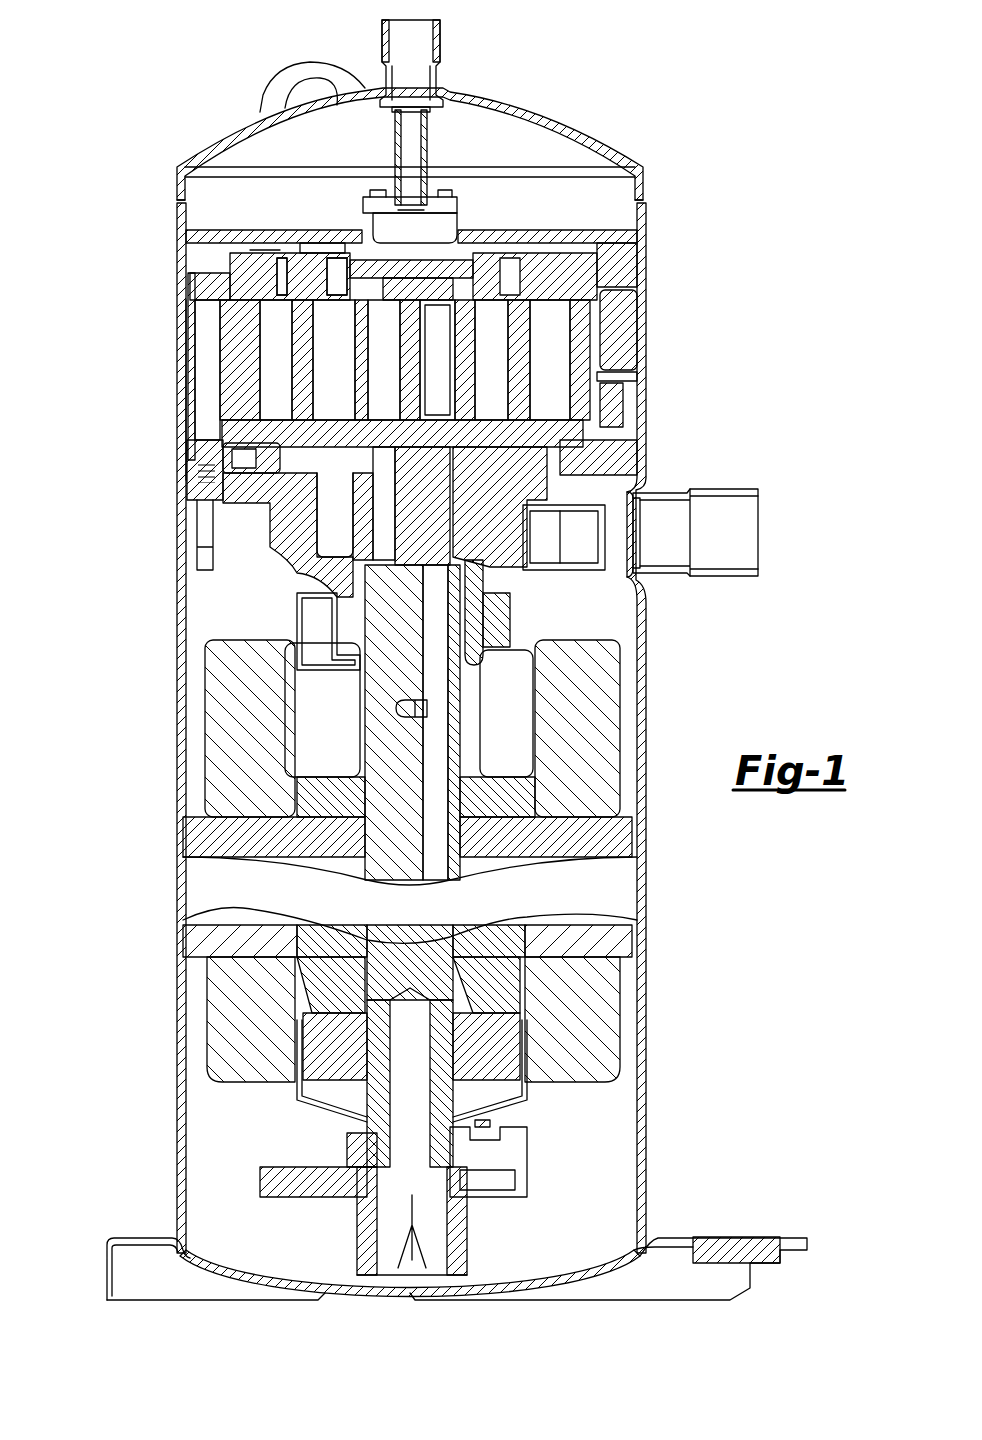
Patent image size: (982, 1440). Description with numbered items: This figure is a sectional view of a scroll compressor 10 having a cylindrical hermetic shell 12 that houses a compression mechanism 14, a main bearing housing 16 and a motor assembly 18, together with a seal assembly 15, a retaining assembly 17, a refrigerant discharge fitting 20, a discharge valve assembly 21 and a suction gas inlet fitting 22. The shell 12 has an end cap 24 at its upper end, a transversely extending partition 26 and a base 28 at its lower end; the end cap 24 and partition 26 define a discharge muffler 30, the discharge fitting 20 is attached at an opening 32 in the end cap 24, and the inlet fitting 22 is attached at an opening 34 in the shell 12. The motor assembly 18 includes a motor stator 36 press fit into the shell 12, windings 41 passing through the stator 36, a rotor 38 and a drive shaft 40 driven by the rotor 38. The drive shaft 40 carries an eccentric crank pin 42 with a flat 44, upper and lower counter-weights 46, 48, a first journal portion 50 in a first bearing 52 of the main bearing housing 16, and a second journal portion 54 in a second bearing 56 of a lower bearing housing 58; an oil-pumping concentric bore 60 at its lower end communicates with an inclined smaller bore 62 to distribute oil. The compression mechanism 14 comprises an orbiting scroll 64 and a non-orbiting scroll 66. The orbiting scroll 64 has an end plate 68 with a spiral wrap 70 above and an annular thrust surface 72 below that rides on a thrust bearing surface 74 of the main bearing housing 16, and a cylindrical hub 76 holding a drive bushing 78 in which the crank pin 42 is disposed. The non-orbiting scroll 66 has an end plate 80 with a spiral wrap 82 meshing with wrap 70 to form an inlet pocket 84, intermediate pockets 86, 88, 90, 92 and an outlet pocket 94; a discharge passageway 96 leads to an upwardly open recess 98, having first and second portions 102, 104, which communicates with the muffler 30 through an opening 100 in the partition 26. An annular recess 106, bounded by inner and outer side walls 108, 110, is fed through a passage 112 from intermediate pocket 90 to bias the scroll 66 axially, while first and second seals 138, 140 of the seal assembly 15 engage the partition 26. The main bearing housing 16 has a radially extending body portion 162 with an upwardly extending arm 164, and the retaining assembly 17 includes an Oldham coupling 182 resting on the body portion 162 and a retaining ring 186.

The compressor 10 is at (457, 681).
The cylindrical hermetic shell 12 is at (644, 665).
The compression mechanism 14 is at (416, 217).
The seal assembly 15 is at (276, 258).
The main bearing housing 16 is at (347, 436).
The retaining assembly 17 is at (182, 345).
The motor assembly 18 is at (367, 861).
The refrigerant discharge fitting 20 is at (382, 40).
The discharge valve assembly 21 is at (437, 217).
The suction gas inlet fitting 22 is at (692, 499).
The end cap 24 is at (560, 120).
The transversely extending partition 26 is at (285, 240).
The base 28 is at (690, 1237).
The discharge muffler 30 is at (288, 154).
The opening 32 is at (430, 95).
The opening 34 is at (634, 495).
The motor stator 36 is at (254, 908).
The rotor 38 is at (320, 805).
The drive shaft 40 is at (382, 774).
The windings 41 is at (215, 662).
The eccentric crank pin 42 is at (410, 532).
The flat 44 is at (384, 442).
The upper counter-weight 46 is at (325, 665).
The lower counter-weight 48 is at (518, 1045).
The first journal portion 50 is at (398, 627).
The first bearing 52 is at (472, 603).
The second journal portion 54 is at (372, 1150).
The second bearing 56 is at (434, 1185).
The lower bearing housing 58 is at (358, 1228).
The oil-pumping concentric bore 60 is at (402, 1086).
The inclined bore 62 is at (448, 746).
The orbiting scroll 64 is at (602, 420).
The non-orbiting scroll 66 is at (562, 232).
The end plate 68 is at (232, 460).
The spiral wrap 70 is at (600, 372).
The annular flat thrust surface 72 is at (548, 478).
The thrust bearing surface 74 is at (296, 405).
The cylindrical hub 76 is at (350, 500).
The drive bushing 78 is at (470, 455).
The end plate 80 is at (222, 300).
The spiral wrap 82 is at (562, 302).
The inlet pocket 84 is at (535, 376).
The intermediate pocket 86 is at (482, 352).
The intermediate pocket 88 is at (427, 369).
The intermediate pocket 90 is at (320, 354).
The intermediate pocket 92 is at (266, 334).
The outlet pocket 94 is at (373, 359).
The discharge passageway 96 is at (400, 295).
The upwardly open recess 98 is at (458, 232).
The opening 100 is at (426, 208).
The first portion 102 is at (411, 263).
The second portion 104 is at (372, 214).
The annular recess 106 is at (525, 298).
The inner side wall 108 is at (336, 255).
The outer side wall 110 is at (200, 236).
The passage 112 is at (300, 305).
The first seal 138 is at (338, 258).
The second seal 140 is at (282, 255).
The radially extending body portion 162 is at (245, 490).
The arm 164 is at (192, 386).
The Oldham coupling 182 is at (612, 442).
The retaining ring 186 is at (625, 318).